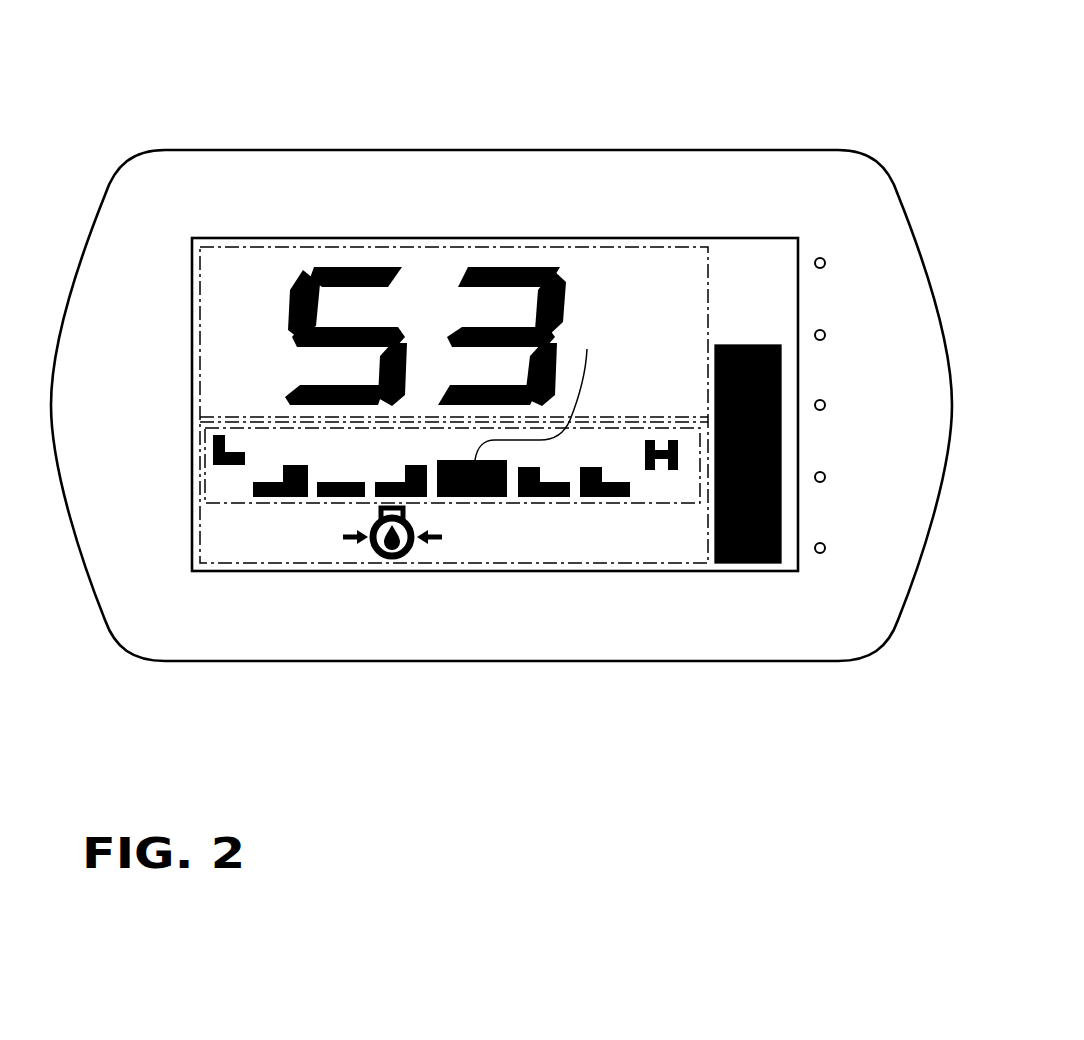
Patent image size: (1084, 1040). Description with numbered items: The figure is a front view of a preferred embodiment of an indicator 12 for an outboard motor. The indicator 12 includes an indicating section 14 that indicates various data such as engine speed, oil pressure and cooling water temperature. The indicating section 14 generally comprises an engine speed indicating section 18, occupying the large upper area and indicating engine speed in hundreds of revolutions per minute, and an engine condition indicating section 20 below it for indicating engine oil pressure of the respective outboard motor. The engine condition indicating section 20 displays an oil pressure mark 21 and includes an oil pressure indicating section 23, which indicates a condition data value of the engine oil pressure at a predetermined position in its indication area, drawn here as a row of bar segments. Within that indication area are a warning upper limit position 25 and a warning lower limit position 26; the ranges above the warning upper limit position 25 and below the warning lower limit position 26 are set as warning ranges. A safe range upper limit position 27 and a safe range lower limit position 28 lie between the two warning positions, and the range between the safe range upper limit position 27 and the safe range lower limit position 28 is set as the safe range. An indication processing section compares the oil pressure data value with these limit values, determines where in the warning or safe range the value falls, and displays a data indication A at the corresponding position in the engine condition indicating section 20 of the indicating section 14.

The indicator 12 is at (704, 116).
The indicating section 14 is at (594, 226).
The engine speed indicating section 18 is at (425, 247).
The engine condition indicating section 20 is at (252, 563).
The oil pressure mark 21 is at (410, 553).
The oil pressure indicating section 23 is at (588, 503).
The warning upper limit position 25 is at (590, 465).
The warning lower limit position 26 is at (297, 465).
The safe range upper limit position 27 is at (530, 467).
The safe range lower limit position 28 is at (417, 465).